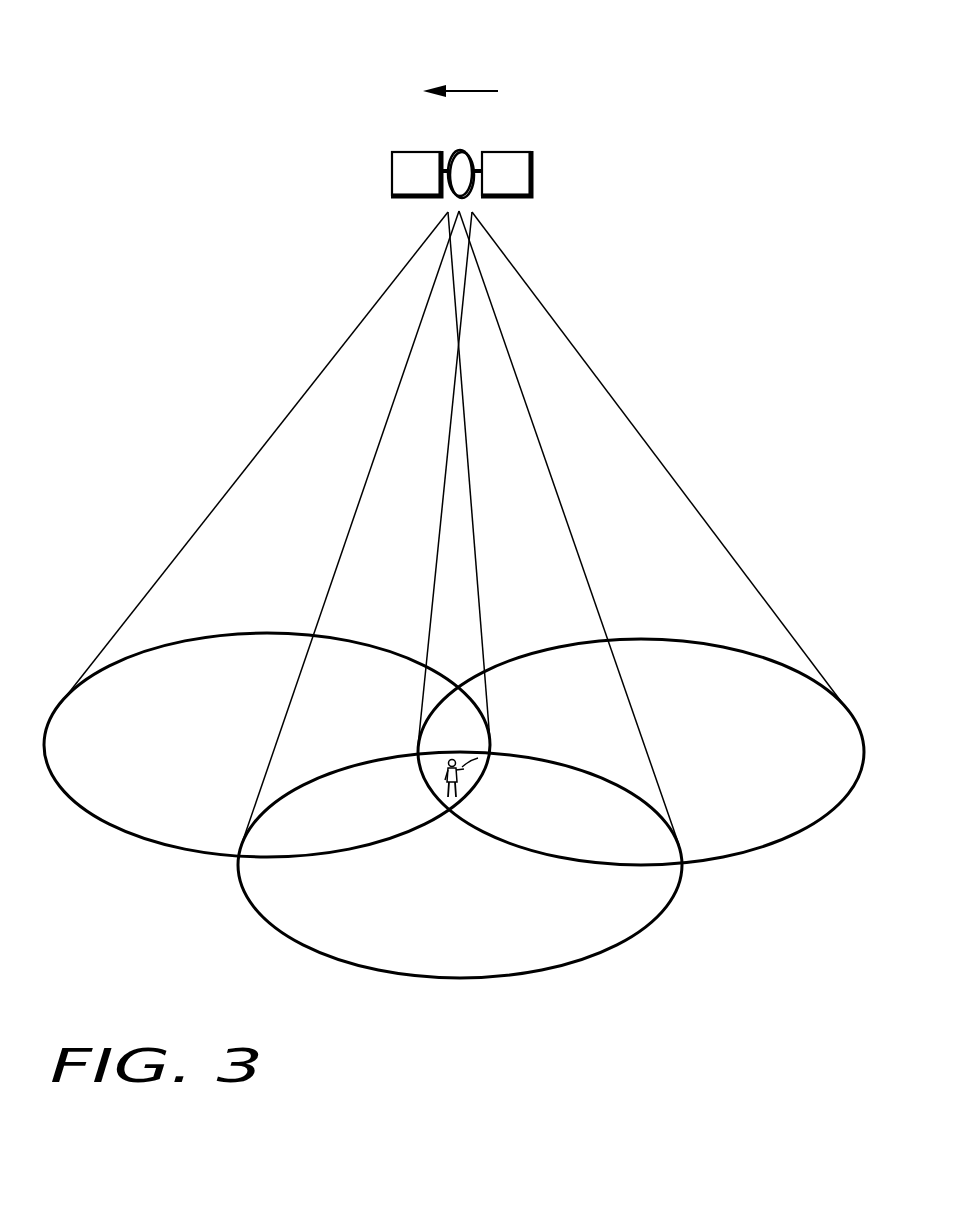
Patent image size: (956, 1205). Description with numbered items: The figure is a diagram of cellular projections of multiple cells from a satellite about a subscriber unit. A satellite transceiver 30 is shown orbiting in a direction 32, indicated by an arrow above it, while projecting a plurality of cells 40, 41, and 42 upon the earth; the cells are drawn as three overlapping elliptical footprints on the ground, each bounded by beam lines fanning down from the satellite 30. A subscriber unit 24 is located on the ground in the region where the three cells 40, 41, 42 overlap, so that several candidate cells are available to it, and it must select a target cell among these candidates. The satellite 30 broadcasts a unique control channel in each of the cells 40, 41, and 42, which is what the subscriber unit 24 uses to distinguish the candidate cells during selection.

The subscriber unit 24 is at (466, 762).
The satellite transceiver 30 is at (531, 163).
The direction 32 is at (497, 92).
The cell 40 is at (123, 817).
The cell 41 is at (360, 952).
The cell 42 is at (780, 827).